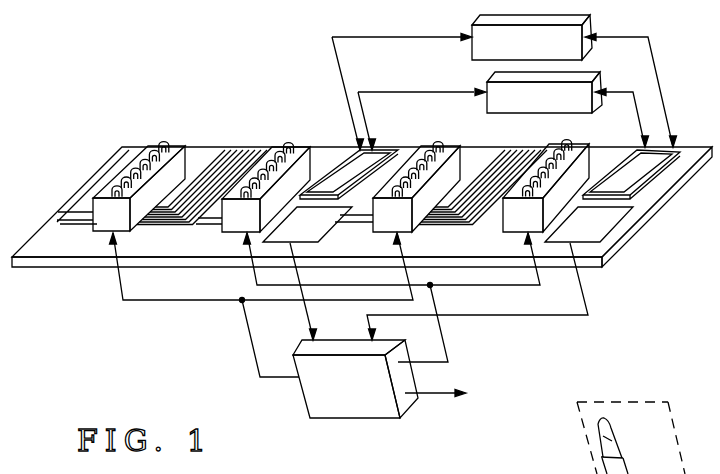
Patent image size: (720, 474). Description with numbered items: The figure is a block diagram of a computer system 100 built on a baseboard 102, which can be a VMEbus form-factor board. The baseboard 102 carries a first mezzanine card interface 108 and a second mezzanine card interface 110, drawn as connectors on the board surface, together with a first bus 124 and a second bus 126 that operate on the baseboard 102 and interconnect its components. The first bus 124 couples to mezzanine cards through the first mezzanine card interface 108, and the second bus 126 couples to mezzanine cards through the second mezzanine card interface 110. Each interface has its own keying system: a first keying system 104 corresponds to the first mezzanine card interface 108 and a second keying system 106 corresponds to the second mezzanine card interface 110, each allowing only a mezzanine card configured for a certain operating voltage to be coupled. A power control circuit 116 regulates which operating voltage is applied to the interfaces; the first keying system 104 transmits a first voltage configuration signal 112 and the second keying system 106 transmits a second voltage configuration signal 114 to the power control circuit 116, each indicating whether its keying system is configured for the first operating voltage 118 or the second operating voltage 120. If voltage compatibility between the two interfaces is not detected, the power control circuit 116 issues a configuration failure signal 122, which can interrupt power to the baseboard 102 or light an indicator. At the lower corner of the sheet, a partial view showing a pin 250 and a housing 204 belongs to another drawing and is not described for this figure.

The computer system 100 is at (146, 398).
The baseboard 102 is at (667, 198).
The first keying system 104 is at (617, 223).
The second keying system 106 is at (322, 236).
The first mezzanine card interface 108 is at (433, 147).
The second mezzanine card interface 110 is at (147, 143).
The first voltage configuration signal 112 is at (589, 307).
The second voltage configuration signal 114 is at (310, 330).
The power control circuit 116 is at (335, 421).
The first operating voltage 118 is at (448, 347).
The second operating voltage 120 is at (254, 346).
The configuration failure signal 122 is at (432, 395).
The first bus 124 is at (474, 56).
The second bus 126 is at (490, 112).
The connector housing (partial adjacent figure) 204 is at (686, 461).
The keying pin (partial adjacent figure) 250 is at (608, 442).